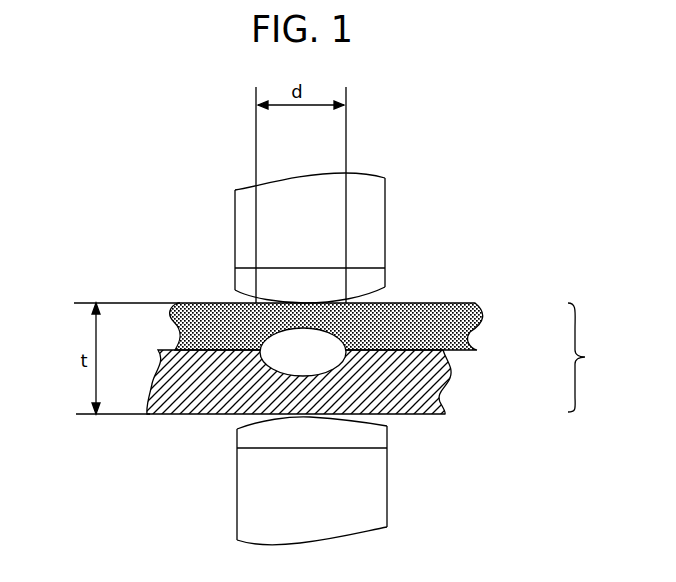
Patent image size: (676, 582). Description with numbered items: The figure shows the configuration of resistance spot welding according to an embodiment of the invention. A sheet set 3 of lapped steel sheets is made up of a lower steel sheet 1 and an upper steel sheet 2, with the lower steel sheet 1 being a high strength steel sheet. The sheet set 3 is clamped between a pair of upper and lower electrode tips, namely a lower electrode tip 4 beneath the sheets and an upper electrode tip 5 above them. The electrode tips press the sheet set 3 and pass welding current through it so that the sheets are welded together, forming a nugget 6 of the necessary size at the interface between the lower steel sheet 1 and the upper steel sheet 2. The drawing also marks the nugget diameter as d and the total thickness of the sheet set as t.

The lower steel sheet 1 is at (446, 385).
The upper steel sheet 2 is at (477, 330).
The sheet set 3 is at (587, 357).
The lower electrode tip 4 is at (388, 483).
The upper electrode tip 5 is at (386, 237).
The nugget 6 is at (292, 356).